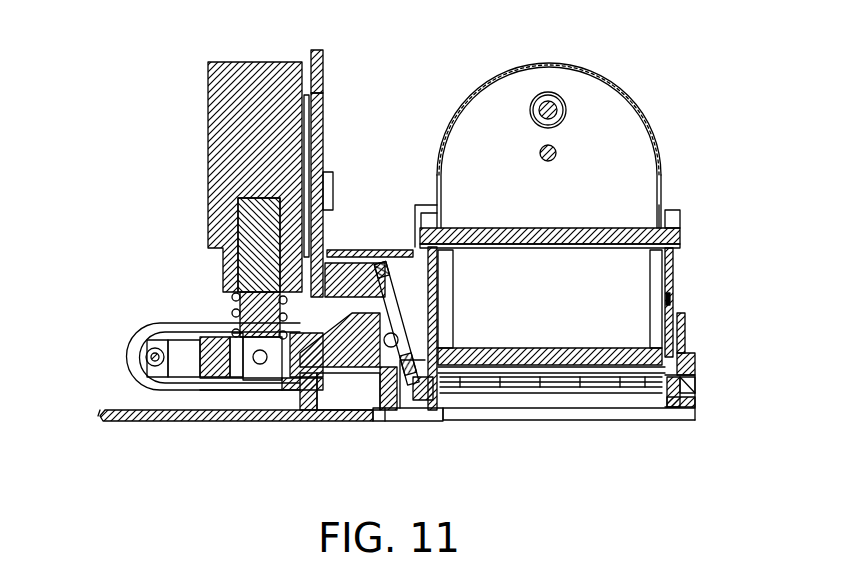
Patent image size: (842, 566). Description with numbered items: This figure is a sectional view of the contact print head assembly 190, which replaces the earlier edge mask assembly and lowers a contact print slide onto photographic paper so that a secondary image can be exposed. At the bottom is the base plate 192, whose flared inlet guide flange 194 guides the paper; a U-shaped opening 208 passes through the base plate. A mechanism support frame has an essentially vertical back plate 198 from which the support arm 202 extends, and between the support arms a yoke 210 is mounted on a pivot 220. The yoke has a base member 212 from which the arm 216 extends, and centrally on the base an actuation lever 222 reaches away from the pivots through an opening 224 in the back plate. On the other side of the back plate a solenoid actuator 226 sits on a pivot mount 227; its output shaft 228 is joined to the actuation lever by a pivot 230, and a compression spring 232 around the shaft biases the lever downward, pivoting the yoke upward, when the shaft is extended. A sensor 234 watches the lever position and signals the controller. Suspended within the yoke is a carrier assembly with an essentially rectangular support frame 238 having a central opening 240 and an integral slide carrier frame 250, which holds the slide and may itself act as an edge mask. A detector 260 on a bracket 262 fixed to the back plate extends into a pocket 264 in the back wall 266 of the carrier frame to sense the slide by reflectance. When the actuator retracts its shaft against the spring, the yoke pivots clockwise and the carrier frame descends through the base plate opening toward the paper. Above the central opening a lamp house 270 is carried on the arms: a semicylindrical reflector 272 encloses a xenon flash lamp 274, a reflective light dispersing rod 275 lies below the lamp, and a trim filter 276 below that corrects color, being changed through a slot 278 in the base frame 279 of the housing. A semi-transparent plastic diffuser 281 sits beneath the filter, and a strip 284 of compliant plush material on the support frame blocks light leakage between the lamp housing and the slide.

The contact print head assembly 190 is at (470, 60).
The base plate 192 is at (234, 421).
The flared inlet guide flange 194 is at (100, 412).
The back plate 198 is at (317, 50).
The support arm 202 is at (673, 258).
The U-shaped opening 208 is at (434, 414).
The yoke 210 is at (393, 421).
The base member 212 is at (355, 395).
The arm 216 is at (425, 305).
The pivot 220 is at (397, 341).
The actuation lever 222 is at (296, 410).
The opening 224 is at (343, 250).
The solenoid actuator 226 is at (260, 62).
The pivot mount 227 is at (323, 94).
The output shaft 228 is at (233, 292).
The pivot 230 is at (258, 365).
The compression spring 232 is at (234, 333).
The sensor 234 is at (146, 345).
The support frame 238 is at (686, 334).
The central opening 240 is at (648, 292).
The slide carrier frame 250 is at (700, 390).
The detector 260 is at (461, 294).
The bracket 262 is at (354, 268).
The pocket 264 is at (436, 390).
The back wall 266 is at (433, 420).
The lamp house 270 is at (641, 134).
The semicylindrical reflector 272 is at (611, 82).
The xenon flash lamp 274 is at (554, 115).
The reflective light dispersing rod 275 is at (543, 158).
The trim filter 276 is at (634, 227).
The slot 278 is at (683, 229).
The base frame 279 is at (682, 213).
The semi-transparent plastic diffuser 281 is at (584, 356).
The strip of compliant plush material 284 is at (695, 365).